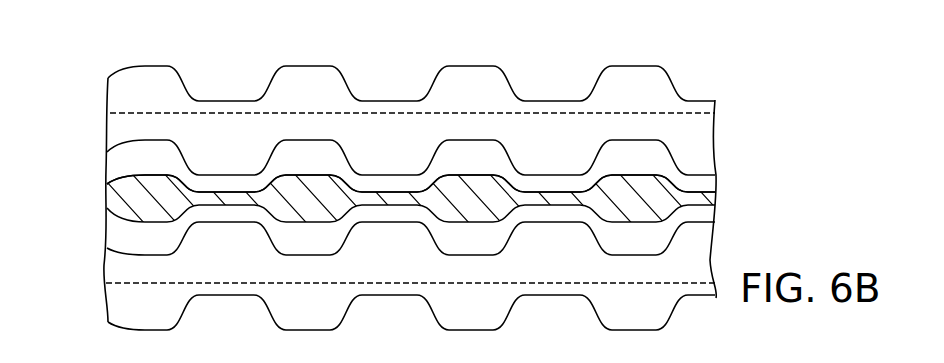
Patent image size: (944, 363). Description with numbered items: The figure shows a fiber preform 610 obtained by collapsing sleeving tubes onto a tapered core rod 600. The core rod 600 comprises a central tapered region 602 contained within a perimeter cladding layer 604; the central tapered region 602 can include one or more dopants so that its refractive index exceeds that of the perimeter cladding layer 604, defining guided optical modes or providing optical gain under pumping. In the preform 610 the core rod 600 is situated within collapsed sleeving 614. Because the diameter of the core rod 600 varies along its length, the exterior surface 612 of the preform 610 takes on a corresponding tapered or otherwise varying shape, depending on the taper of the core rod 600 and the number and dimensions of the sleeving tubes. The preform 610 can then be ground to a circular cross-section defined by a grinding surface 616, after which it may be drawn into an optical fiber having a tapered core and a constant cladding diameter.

The tapered core rod 600 is at (413, 199).
The central tapered region 602 is at (117, 199).
The perimeter cladding layer 604 is at (118, 161).
The preform 610 is at (726, 72).
The exterior surface 612 is at (518, 92).
The collapsed sleeving 614 is at (700, 140).
The grinding surface 616 is at (167, 115).